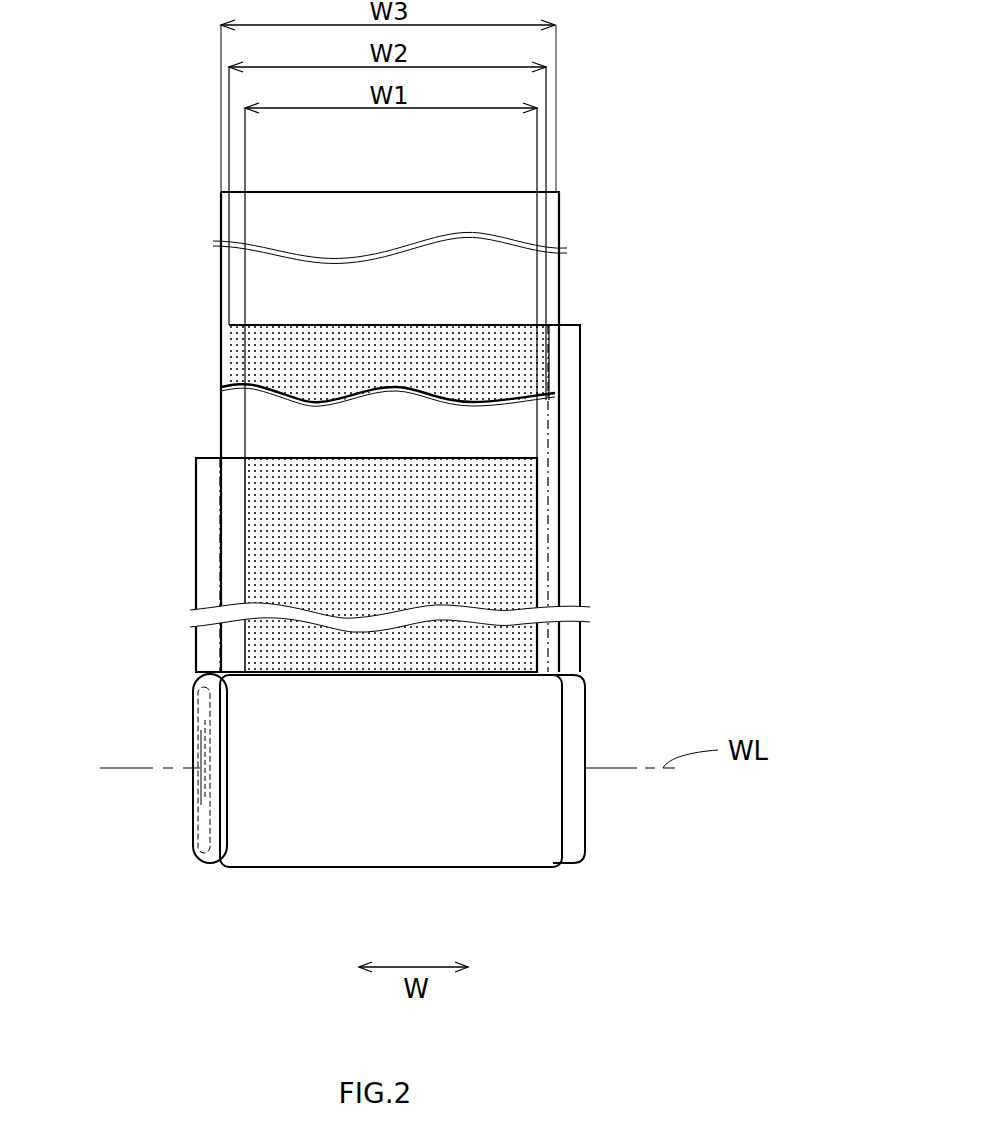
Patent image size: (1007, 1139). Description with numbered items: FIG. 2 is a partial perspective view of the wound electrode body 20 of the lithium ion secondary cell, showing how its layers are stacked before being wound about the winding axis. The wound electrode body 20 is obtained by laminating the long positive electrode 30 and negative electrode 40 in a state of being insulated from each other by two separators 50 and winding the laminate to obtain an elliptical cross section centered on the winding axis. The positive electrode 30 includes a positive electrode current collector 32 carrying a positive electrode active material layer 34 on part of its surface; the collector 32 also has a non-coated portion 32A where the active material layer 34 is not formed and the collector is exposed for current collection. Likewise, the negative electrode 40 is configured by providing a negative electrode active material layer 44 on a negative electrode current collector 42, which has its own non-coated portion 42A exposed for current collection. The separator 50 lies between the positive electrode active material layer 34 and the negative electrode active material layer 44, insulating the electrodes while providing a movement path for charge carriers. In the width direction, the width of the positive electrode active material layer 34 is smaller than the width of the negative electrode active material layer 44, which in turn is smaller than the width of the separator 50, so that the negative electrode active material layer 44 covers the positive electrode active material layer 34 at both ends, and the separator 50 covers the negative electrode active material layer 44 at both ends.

The wound electrode body 20 is at (615, 175).
The positive electrode 30 is at (370, 564).
The positive electrode current collector 32 is at (196, 480).
The non-coated portion 32A is at (208, 598).
The positive electrode active material layer 34 is at (277, 557).
The negative electrode 40 is at (463, 472).
The negative electrode current collector 42 is at (580, 503).
The non-coated portion 42A is at (567, 452).
The negative electrode active material layer 44 is at (483, 357).
The separator 50 is at (220, 297).